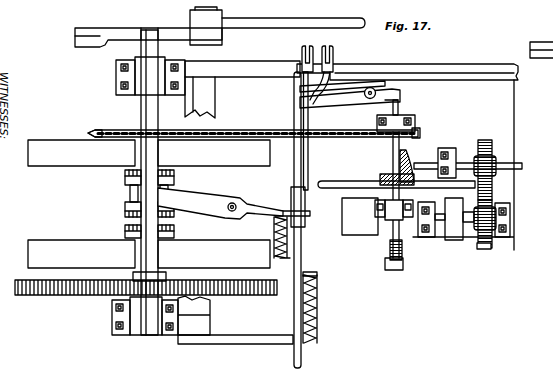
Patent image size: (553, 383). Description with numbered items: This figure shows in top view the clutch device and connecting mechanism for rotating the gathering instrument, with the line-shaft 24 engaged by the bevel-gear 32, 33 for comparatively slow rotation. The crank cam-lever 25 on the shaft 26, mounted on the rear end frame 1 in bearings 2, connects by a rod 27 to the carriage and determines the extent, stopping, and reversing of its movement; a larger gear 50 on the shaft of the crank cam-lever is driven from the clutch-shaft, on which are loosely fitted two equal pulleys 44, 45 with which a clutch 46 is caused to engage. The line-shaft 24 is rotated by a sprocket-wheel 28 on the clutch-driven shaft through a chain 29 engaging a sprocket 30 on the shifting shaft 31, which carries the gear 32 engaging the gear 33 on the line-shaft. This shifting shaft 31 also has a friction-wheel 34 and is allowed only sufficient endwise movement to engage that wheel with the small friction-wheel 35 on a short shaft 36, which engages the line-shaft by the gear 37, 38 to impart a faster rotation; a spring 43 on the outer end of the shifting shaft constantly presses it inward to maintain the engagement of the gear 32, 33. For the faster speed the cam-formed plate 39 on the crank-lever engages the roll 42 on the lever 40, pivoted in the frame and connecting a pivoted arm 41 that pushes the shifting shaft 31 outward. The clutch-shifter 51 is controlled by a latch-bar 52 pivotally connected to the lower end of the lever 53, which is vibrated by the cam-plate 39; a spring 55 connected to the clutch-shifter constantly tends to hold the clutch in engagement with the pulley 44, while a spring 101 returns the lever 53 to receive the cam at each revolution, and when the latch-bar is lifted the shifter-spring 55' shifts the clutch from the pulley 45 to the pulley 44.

The frame 1 is at (461, 72).
The bearing bracket 2 is at (196, 204).
The line-shaft 24 is at (522, 167).
The crank cam-lever 25 is at (148, 27).
The shaft 26 is at (142, 246).
The rod 27 is at (293, 16).
The sprocket-wheel 28 is at (95, 132).
The chain 29 is at (265, 130).
The sprocket 30 is at (420, 139).
The shifting shaft 31 is at (413, 112).
The gear 32 is at (383, 178).
The gear 33 is at (410, 156).
The friction-wheel 34 is at (318, 188).
The small friction-wheel 35 is at (455, 240).
The short shaft 36 is at (488, 197).
The gear 37 is at (491, 246).
The gear 38 is at (485, 140).
The cam-formed plate 39 is at (213, 52).
The lever 40 is at (335, 88).
The pivoted arm 41 is at (392, 98).
The roll 42 is at (329, 48).
The spring 43 is at (403, 250).
The pulley 44 is at (149, 153).
The pulley 45 is at (149, 254).
The clutch 46 is at (127, 200).
The gear 50 is at (53, 292).
The clutch-shifter 51 is at (195, 195).
The latch-bar 52 is at (302, 178).
The lever 53 is at (302, 62).
The spring 55 is at (81, 52).
The shifter-spring 55' is at (261, 237).
The spring 101 is at (313, 310).